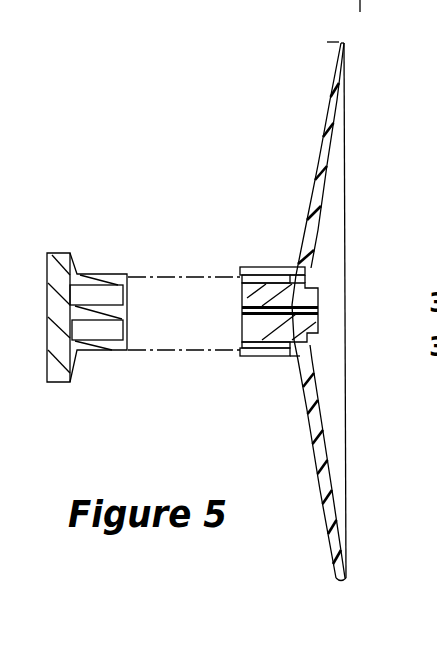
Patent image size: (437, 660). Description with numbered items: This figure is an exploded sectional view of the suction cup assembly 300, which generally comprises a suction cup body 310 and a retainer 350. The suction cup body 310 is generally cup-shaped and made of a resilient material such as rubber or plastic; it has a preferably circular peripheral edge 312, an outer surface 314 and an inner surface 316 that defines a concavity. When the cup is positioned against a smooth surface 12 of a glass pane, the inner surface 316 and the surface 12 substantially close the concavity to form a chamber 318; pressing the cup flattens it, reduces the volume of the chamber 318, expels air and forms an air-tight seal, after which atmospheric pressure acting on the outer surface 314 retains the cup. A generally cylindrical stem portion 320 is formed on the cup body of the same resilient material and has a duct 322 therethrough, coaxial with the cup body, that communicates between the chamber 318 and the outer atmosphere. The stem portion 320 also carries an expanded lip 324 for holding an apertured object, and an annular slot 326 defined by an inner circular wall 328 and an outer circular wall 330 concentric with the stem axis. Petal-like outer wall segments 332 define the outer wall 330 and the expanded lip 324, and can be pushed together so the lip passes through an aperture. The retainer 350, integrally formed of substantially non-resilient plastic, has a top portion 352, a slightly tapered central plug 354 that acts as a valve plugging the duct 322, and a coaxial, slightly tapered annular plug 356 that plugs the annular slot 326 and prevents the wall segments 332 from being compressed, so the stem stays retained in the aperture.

The suction cup assembly 300 is at (166, 206).
The suction cup body 310 is at (308, 120).
The peripheral edge 312 is at (345, 43).
The surface 12 is at (346, 126).
The outer surface 314 is at (313, 163).
The inner surface 316 is at (326, 183).
The chamber 318 is at (346, 221).
The stem portion 320 is at (262, 255).
The duct 322 is at (299, 302).
The expanded lip 324 is at (274, 265).
The annular slot 326 is at (287, 359).
The inner circular wall 328 is at (252, 311).
The outer circular wall 330 is at (262, 276).
The outer wall segments 332 is at (284, 282).
The retainer 350 is at (63, 392).
The top portion 352 is at (55, 256).
The central plug 354 is at (97, 310).
The annular plug 356 is at (95, 279).